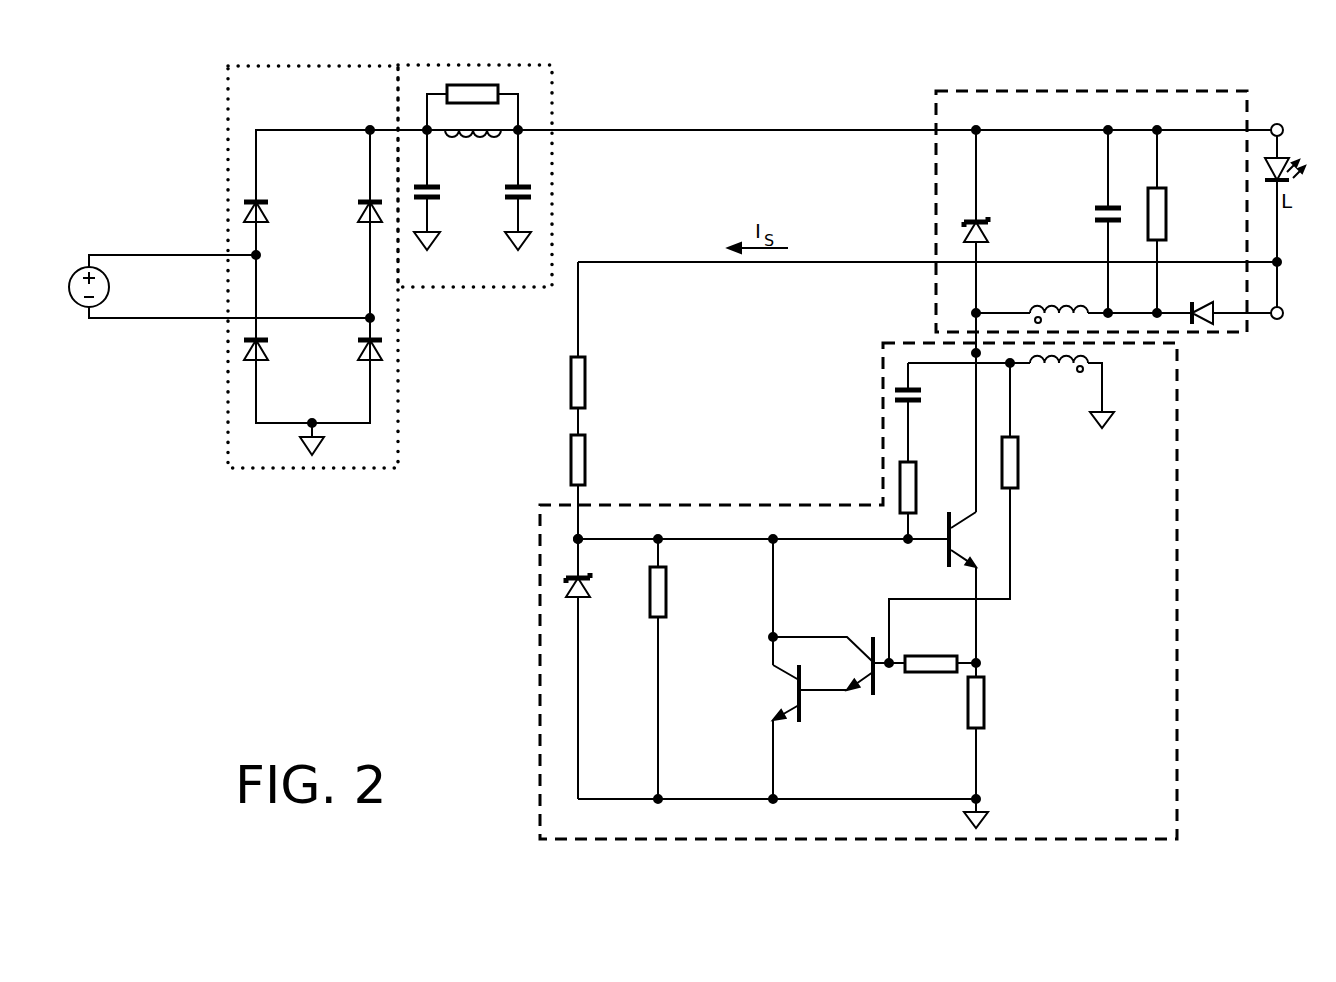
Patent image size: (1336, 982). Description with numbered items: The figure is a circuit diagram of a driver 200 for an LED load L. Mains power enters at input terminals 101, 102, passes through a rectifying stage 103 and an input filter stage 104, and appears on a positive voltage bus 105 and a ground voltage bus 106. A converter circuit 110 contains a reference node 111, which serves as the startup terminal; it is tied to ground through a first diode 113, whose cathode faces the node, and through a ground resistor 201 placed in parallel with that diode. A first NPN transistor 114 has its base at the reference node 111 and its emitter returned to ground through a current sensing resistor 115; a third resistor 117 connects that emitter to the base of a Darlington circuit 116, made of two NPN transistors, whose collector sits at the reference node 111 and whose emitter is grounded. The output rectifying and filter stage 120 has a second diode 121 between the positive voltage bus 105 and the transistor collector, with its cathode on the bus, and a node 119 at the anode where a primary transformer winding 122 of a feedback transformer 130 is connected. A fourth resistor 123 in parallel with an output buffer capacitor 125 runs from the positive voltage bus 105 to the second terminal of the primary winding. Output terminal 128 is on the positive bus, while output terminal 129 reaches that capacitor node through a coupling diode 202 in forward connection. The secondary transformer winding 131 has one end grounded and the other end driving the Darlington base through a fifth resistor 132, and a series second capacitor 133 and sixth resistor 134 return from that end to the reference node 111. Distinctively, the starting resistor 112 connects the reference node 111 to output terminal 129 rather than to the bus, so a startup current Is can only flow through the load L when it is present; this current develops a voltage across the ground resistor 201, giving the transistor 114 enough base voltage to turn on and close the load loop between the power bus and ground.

The input terminal 101 is at (174, 250).
The input terminal 102 is at (231, 318).
The rectifying stage 103 is at (228, 75).
The input filter stage 104 is at (511, 170).
The positive voltage bus 105 is at (700, 130).
The ground voltage bus 106 is at (473, 205).
The converter circuit 110 is at (542, 700).
The reference node 111 is at (578, 540).
The starting resistor 112 is at (558, 420).
The first diode 113 is at (597, 669).
The first NPN transistor 114 is at (974, 587).
The current sensing resistor 115 is at (995, 731).
The Darlington circuit 116 is at (822, 705).
The third resistor 117 is at (927, 650).
The node 119 is at (976, 353).
The output rectifying and filter stage 120 is at (936, 93).
The second diode 121 is at (998, 219).
The primary transformer winding 122 is at (1059, 299).
The fourth resistor 123 is at (1177, 219).
The output buffer capacitor 125 is at (1087, 219).
The output terminal 128 is at (1296, 131).
The output terminal 129 is at (1296, 314).
The feedback transformer 130 is at (1115, 352).
The secondary transformer winding 131 is at (1059, 377).
The fifth resistor 132 is at (973, 513).
The second capacitor 133 is at (926, 412).
The sixth resistor 134 is at (927, 502).
The driver 200 is at (338, 575).
The ground resistor 201 is at (677, 669).
The coupling diode 202 is at (1205, 299).